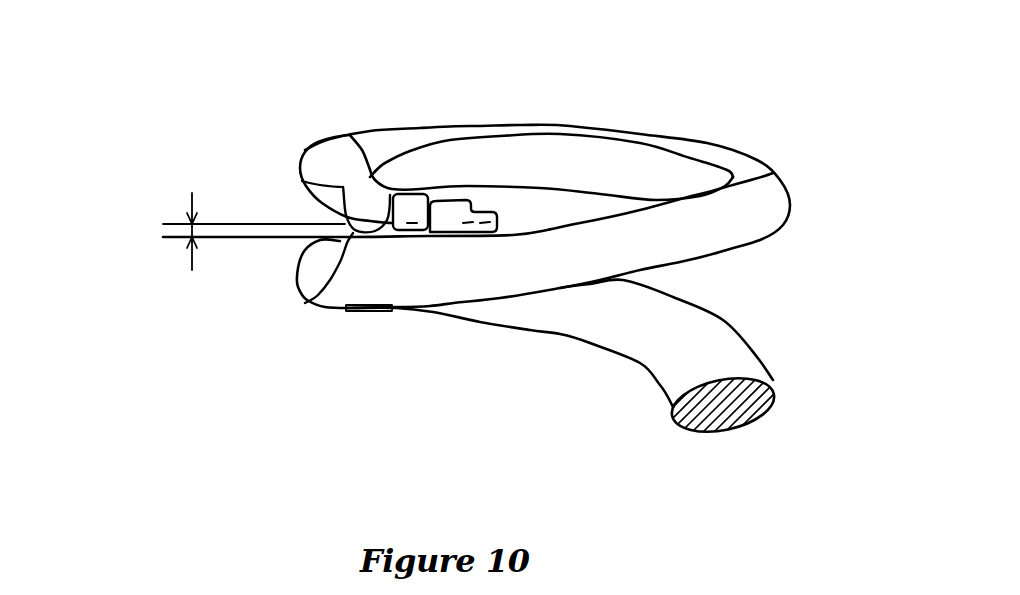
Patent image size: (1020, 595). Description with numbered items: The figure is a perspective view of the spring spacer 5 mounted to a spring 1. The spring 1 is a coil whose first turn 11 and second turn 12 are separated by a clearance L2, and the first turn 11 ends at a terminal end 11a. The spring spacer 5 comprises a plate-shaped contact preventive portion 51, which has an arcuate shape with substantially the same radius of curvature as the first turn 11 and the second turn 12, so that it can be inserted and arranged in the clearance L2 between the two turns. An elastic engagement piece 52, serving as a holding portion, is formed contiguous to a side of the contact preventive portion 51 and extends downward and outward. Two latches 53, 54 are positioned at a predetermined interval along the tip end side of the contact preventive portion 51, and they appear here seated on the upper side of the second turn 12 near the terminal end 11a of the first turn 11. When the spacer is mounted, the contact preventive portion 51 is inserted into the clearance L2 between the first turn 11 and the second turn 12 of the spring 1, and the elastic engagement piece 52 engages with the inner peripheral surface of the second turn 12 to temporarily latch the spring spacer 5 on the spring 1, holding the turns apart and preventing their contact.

The spring 1 is at (796, 190).
The spring spacer 5 is at (423, 235).
The first turn 11 is at (327, 165).
The terminal end 11a is at (362, 200).
The second turn 12 is at (320, 263).
The contact preventive portion 51 is at (313, 303).
The elastic engagement piece 52 is at (370, 311).
The latch 53 is at (413, 202).
The latch 54 is at (463, 208).
The clearance L2 is at (239, 231).